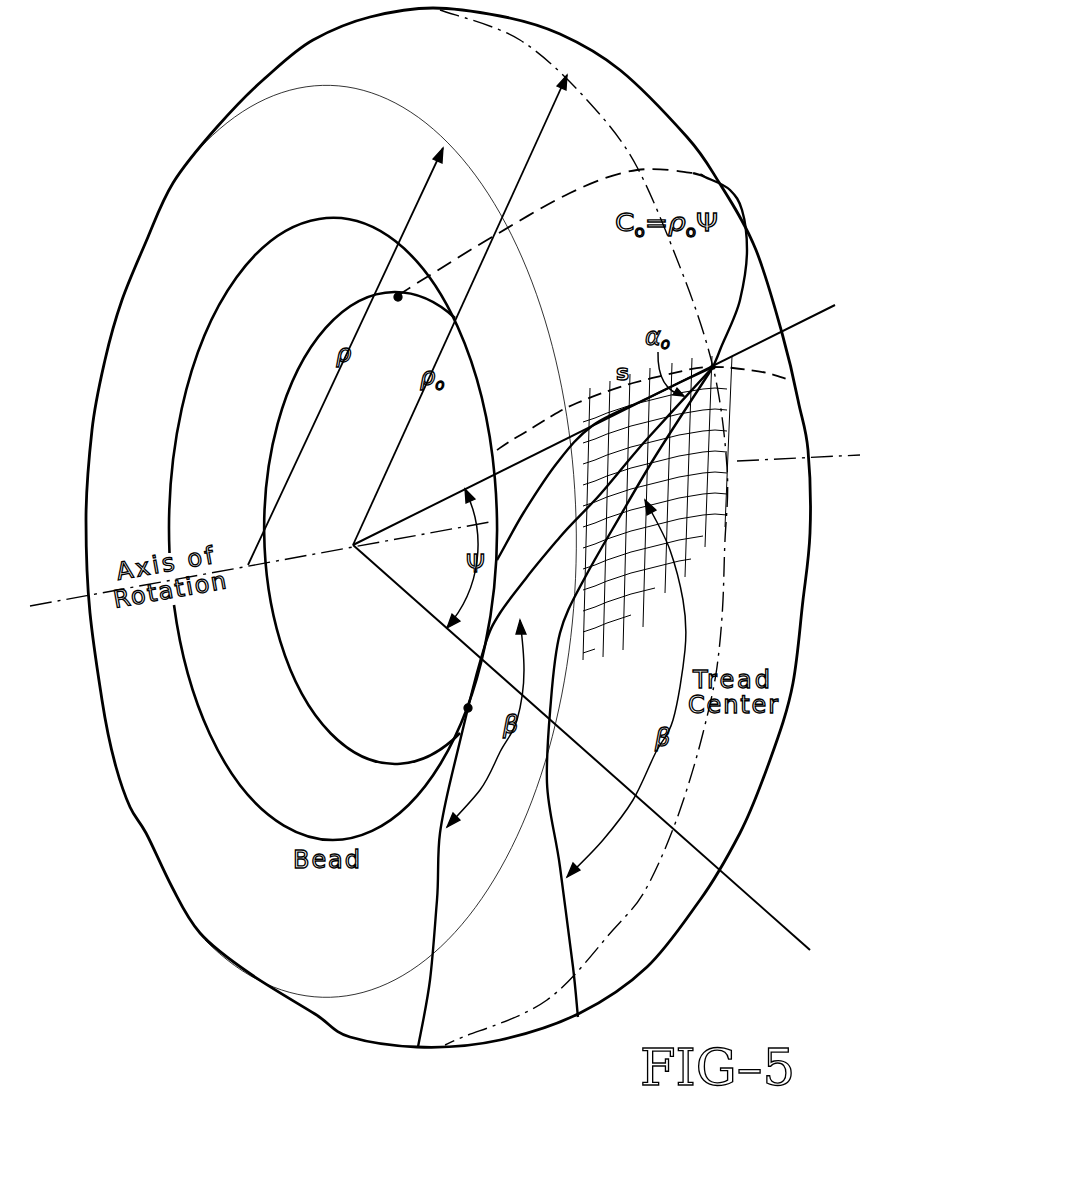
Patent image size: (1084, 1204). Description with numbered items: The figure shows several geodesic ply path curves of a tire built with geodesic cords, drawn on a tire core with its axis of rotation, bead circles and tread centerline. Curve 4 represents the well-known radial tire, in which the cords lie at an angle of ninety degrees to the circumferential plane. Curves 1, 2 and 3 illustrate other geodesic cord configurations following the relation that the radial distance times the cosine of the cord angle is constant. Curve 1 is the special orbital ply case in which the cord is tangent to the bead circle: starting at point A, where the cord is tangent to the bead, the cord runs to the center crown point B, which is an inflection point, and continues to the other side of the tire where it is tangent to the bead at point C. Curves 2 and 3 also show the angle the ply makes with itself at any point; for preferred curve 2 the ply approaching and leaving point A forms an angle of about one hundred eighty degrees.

The curve 1 is at (558, 552).
The curve 2 is at (547, 492).
The curve 3 is at (549, 801).
The curve 4 is at (767, 371).
The point A is at (466, 705).
The center crown point B is at (715, 370).
The point C is at (399, 313).